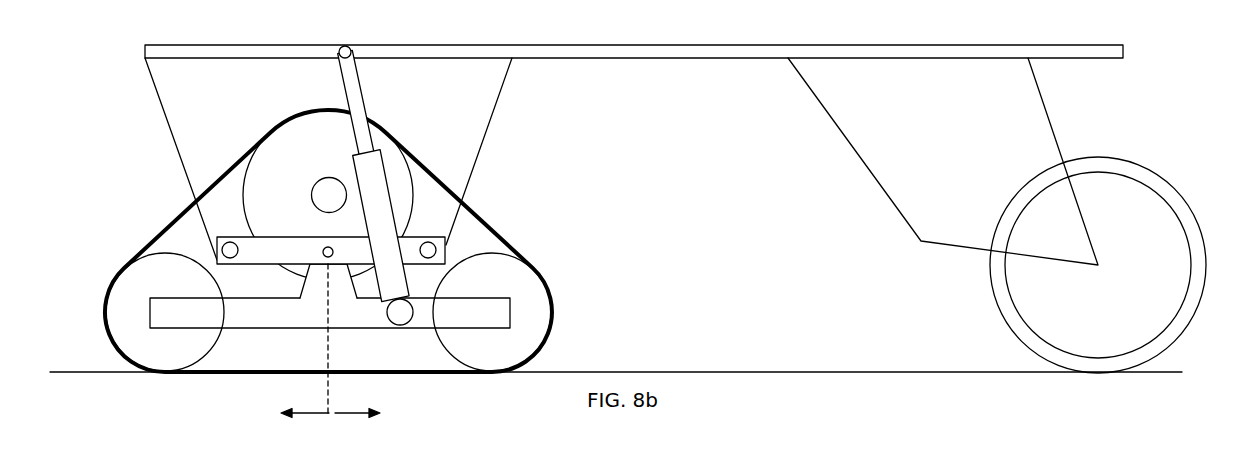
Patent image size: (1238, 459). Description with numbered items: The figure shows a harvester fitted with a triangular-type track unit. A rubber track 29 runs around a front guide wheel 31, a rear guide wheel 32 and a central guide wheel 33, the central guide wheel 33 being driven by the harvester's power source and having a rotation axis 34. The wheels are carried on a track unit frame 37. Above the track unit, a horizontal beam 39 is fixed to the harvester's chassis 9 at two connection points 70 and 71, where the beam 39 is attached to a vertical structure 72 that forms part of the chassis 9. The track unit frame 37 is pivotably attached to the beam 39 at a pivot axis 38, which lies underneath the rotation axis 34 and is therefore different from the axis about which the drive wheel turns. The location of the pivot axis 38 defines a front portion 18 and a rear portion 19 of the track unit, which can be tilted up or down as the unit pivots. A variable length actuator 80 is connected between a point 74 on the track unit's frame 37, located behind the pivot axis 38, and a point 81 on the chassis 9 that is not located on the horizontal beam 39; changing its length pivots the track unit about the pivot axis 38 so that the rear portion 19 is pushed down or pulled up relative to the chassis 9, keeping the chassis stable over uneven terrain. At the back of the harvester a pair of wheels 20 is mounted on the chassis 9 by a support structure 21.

The chassis 9 is at (618, 50).
The wheels 20 is at (1133, 205).
The support structure 21 is at (1048, 141).
The rubber track 29 is at (173, 218).
The front guide wheel 31 is at (138, 287).
The rear guide wheel 32 is at (537, 310).
The central guide wheel 33 is at (308, 130).
The rotation axis 34 is at (329, 196).
The track unit frame 37 is at (340, 310).
The pivot axis 38 is at (326, 250).
The horizontal beam 39 is at (267, 250).
The connection point 70 is at (230, 242).
The connection point 71 is at (428, 242).
The vertical structure 72 is at (473, 95).
The point 74 is at (403, 310).
The variable length actuator 80 is at (377, 197).
The point 81 is at (349, 47).
The front portion 18 is at (305, 403).
The rear portion 19 is at (357, 403).